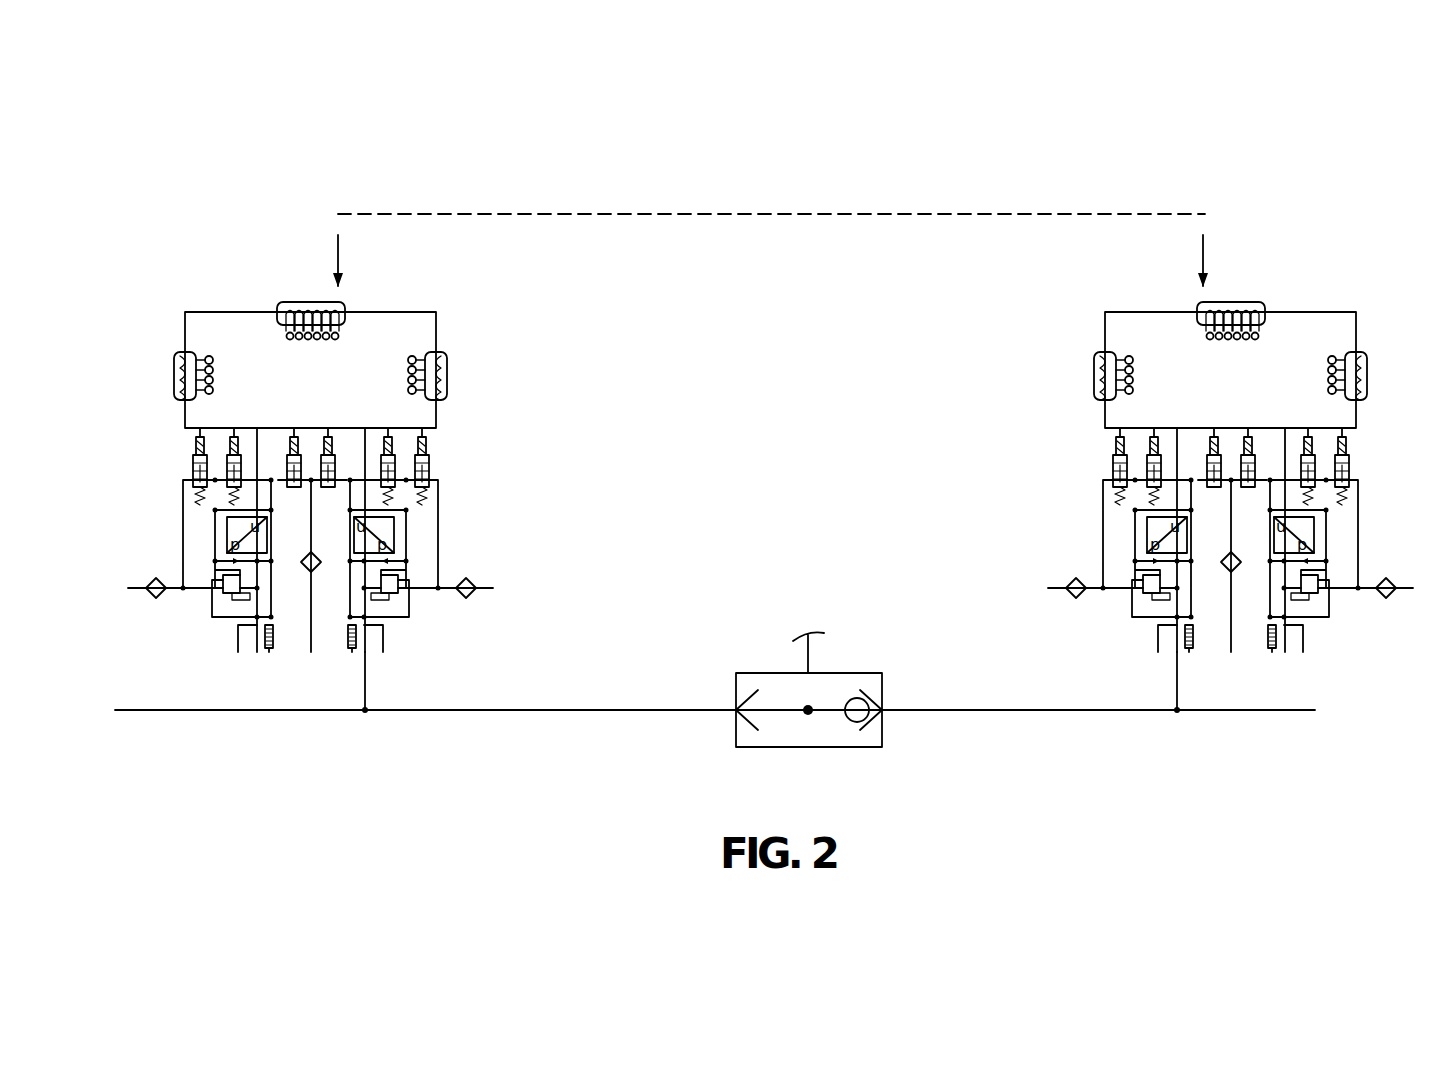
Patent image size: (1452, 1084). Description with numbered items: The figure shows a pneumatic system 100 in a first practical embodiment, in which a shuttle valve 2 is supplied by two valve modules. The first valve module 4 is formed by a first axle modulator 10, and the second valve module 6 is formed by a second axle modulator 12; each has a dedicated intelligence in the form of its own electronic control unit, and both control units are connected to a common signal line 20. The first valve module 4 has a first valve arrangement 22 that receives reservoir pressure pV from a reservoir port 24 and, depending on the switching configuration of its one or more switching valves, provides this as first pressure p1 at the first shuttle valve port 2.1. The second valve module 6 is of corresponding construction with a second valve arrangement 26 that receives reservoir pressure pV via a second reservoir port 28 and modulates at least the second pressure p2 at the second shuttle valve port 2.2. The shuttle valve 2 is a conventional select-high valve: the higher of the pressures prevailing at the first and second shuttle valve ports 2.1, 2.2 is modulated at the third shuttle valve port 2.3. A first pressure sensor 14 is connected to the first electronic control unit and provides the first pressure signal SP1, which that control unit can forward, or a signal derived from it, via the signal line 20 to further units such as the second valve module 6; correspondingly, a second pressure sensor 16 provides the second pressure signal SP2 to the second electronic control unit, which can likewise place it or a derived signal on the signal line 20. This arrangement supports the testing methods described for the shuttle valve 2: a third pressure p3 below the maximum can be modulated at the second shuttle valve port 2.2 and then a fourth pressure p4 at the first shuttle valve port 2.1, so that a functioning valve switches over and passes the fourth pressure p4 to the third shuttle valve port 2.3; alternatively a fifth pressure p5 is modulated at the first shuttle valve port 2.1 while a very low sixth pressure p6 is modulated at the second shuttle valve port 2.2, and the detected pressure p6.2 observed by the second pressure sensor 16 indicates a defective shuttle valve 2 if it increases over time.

The pneumatic system 100 is at (766, 438).
The first valve module 4 is at (360, 429).
The first axle modulator 10 is at (360, 429).
The second valve module 6 is at (1208, 430).
The second axle modulator 12 is at (1208, 430).
The signal line 20 is at (725, 213).
The first valve arrangement 22 is at (360, 429).
The second valve arrangement 26 is at (1208, 430).
The reservoir port 24 is at (131, 540).
The second reservoir port 28 is at (1412, 563).
The reservoir pressure pV is at (129, 616).
The first pressure sensor 14 is at (497, 534).
The first pressure signal SP1 is at (394, 532).
The second pressure sensor 16 is at (1076, 534).
The second pressure signal SP2 is at (1147, 534).
The shuttle valve 2 is at (715, 705).
The first shuttle valve port 2.1 is at (436, 742).
The second shuttle valve port 2.2 is at (1080, 743).
The third shuttle valve port 2.3 is at (808, 673).
The first pressure p1 is at (436, 742).
The second pressure p2 is at (1080, 743).
The third pressure p3 is at (1080, 743).
The fourth pressure p4 is at (436, 742).
The fifth pressure p5 is at (736, 710).
The sixth pressure p6 is at (1080, 743).
The detected pressure p6.2 is at (882, 710).